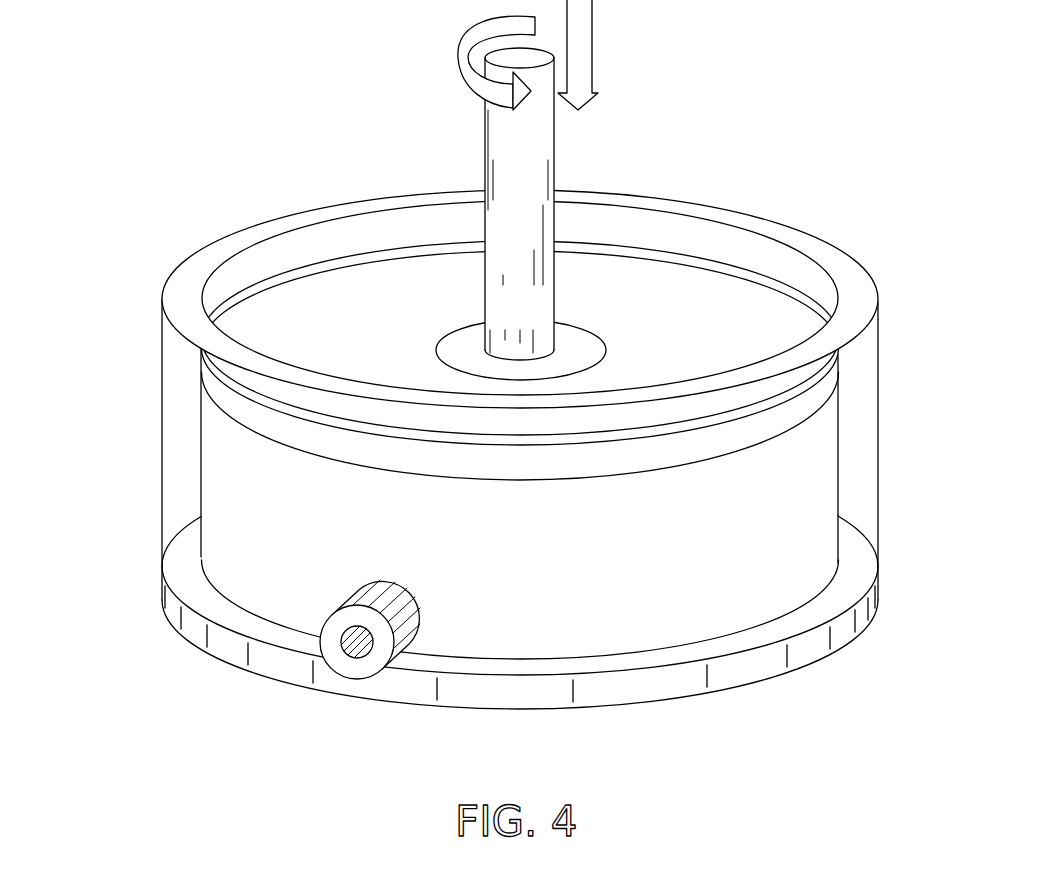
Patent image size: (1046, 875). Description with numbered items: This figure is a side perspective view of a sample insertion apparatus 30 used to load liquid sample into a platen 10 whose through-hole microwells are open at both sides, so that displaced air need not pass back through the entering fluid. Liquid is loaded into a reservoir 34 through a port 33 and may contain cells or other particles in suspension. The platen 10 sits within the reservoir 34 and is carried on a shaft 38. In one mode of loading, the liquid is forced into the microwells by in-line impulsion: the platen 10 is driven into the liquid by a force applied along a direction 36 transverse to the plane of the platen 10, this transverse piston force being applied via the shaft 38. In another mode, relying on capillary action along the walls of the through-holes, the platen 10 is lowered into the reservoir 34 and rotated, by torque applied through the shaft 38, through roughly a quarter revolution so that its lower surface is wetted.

The platen 10 is at (584, 252).
The sample insertion apparatus 30 is at (121, 301).
The port 33 is at (347, 656).
The reservoir 34 is at (858, 296).
The direction 36 is at (592, 34).
The shaft 38 is at (544, 150).